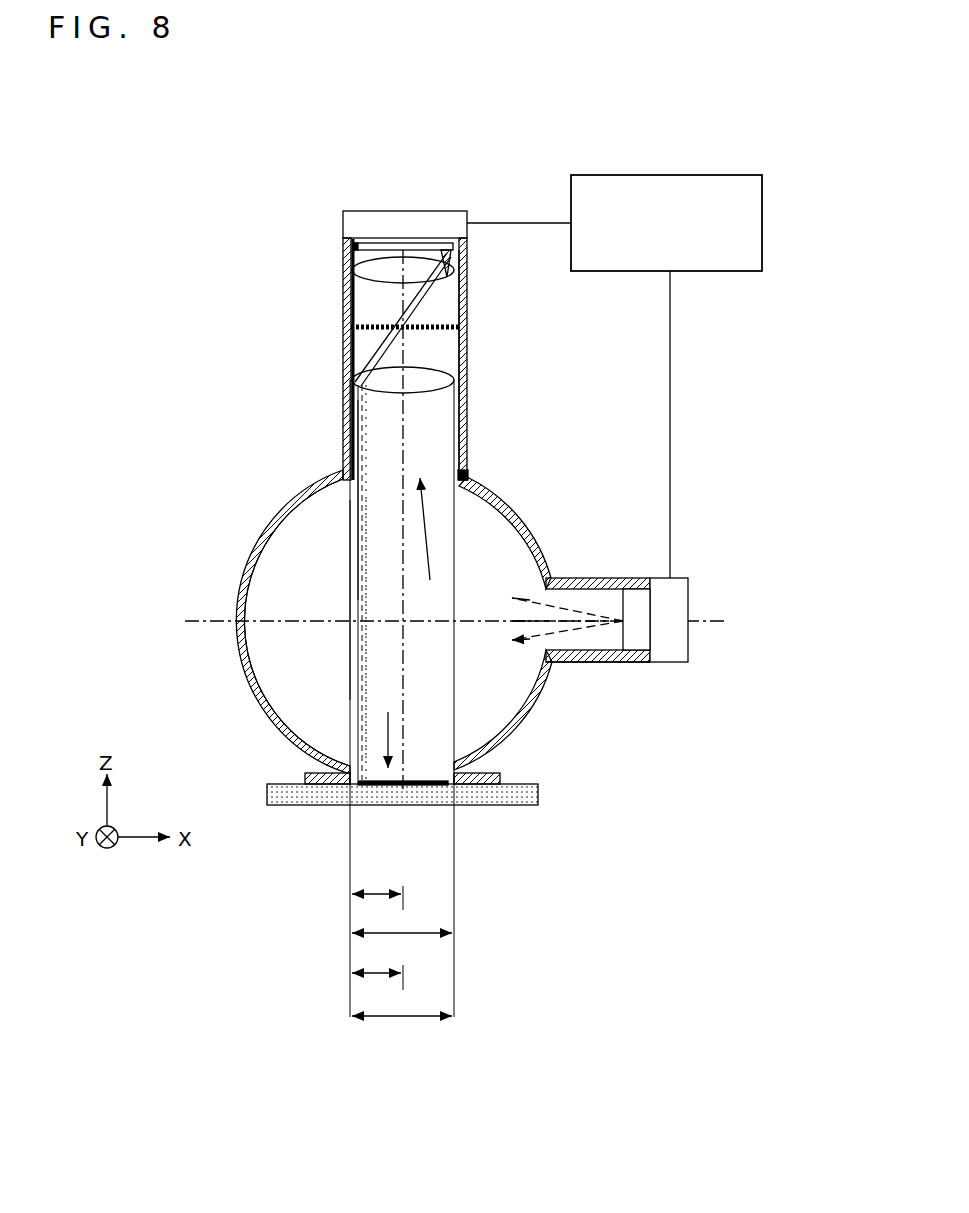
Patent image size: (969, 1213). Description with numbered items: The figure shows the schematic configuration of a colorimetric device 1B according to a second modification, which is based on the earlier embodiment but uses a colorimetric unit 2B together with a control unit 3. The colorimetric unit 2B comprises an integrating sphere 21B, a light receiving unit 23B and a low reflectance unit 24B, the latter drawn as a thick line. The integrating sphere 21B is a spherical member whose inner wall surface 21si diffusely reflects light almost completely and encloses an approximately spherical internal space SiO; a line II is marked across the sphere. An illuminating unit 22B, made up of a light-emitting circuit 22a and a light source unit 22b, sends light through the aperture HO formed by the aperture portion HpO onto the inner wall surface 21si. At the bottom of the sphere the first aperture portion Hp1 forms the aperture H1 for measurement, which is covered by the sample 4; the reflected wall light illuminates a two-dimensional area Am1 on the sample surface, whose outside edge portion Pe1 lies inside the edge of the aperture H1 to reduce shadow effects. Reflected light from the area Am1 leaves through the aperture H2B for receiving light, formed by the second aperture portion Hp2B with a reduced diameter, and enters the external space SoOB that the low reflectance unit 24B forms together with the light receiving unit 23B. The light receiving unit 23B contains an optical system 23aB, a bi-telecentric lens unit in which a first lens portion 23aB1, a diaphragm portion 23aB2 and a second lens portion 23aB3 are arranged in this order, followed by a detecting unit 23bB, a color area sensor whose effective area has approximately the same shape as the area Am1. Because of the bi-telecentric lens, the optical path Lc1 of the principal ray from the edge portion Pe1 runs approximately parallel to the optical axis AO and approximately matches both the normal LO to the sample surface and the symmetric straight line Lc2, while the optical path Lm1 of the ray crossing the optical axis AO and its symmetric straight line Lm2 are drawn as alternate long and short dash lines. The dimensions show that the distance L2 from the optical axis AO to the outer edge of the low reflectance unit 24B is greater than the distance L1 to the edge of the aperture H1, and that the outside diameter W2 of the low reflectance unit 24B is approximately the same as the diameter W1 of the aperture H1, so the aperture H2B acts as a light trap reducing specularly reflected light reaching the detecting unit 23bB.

The colorimetric device 1B is at (347, 152).
The colorimetric unit 2B is at (405, 196).
The control unit 3 is at (727, 175).
The light receiving unit 23B is at (333, 216).
The detecting unit 23bB is at (347, 243).
The optical system 23aB is at (215, 373).
The second lens portion 23aB3 is at (363, 270).
The diaphragm portion 23aB2 is at (375, 327).
The first lens portion 23aB1 is at (352, 380).
The low reflectance unit 24B is at (447, 440).
The optical axis AO is at (385, 520).
The external space SoOB is at (389, 414).
The normal LO is at (343, 436).
The optical path of principal ray Lc1 is at (343, 460).
The straight line Lc2 is at (343, 460).
The straight line Lm2 is at (358, 497).
The optical path Lm1 is at (358, 528).
The aperture for receiving light H2B is at (383, 580).
The second aperture portion Hp2B is at (461, 484).
The aperture for measurement H1 is at (384, 727).
The first aperture portion Hp1 is at (460, 773).
The integrating sphere 21B is at (282, 750).
The inner wall surface 21si is at (290, 722).
The internal space SiO is at (312, 648).
The two-dimensional area Am1 is at (424, 778).
The outside edge portion Pe1 is at (355, 787).
The sample 4 is at (528, 806).
The light source section 22B is at (692, 672).
The light-emitting circuit 22a is at (670, 665).
The light source unit 22b is at (631, 662).
The aperture HO is at (548, 596).
The aperture portion HpO is at (553, 650).
The section line II is at (186, 621).
The distance L1 is at (377, 905).
The diameter W1 is at (402, 947).
The distance L2 is at (377, 984).
The outside diameter W2 is at (403, 711).